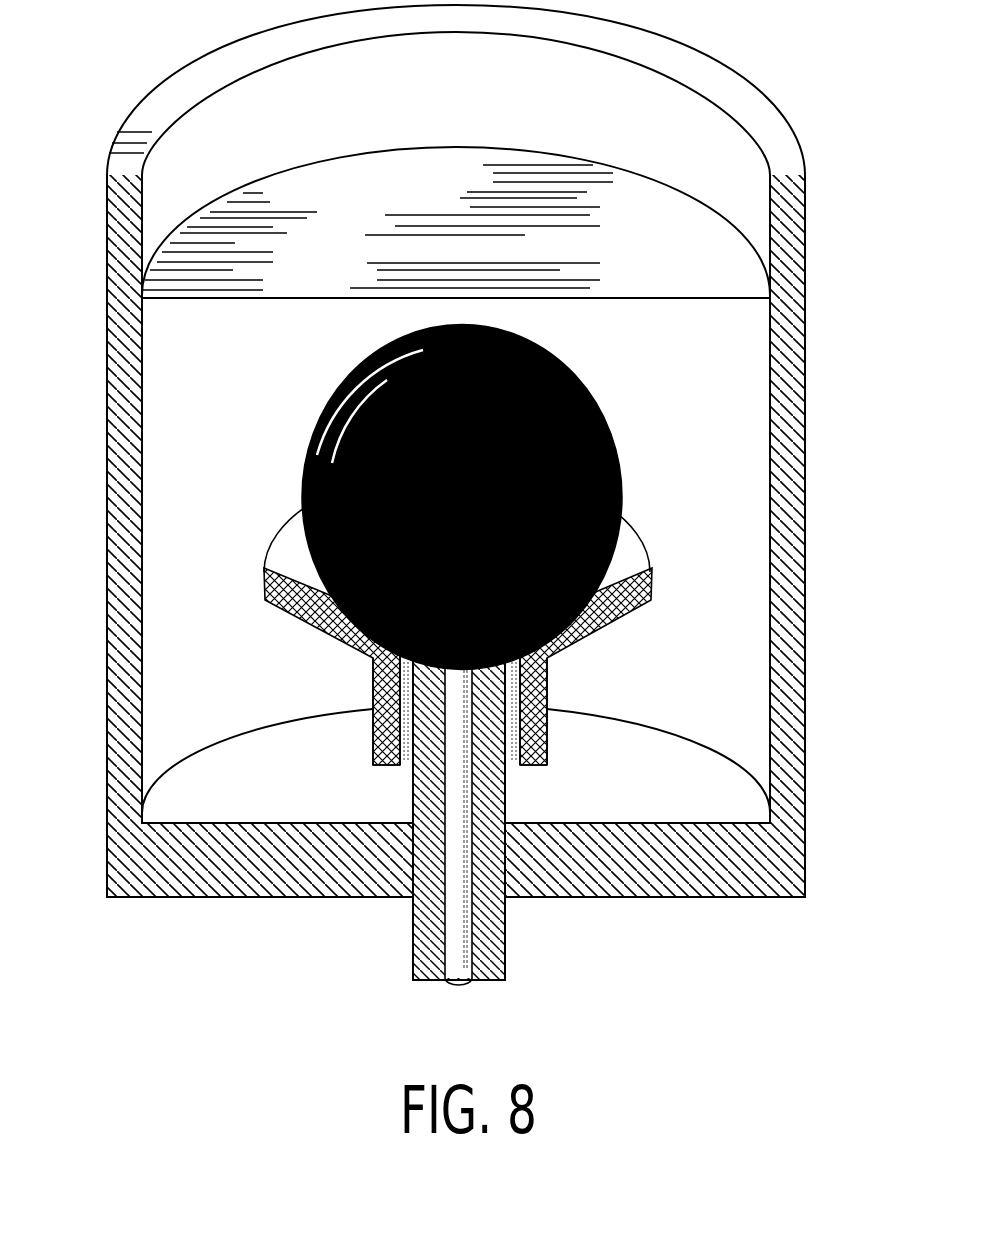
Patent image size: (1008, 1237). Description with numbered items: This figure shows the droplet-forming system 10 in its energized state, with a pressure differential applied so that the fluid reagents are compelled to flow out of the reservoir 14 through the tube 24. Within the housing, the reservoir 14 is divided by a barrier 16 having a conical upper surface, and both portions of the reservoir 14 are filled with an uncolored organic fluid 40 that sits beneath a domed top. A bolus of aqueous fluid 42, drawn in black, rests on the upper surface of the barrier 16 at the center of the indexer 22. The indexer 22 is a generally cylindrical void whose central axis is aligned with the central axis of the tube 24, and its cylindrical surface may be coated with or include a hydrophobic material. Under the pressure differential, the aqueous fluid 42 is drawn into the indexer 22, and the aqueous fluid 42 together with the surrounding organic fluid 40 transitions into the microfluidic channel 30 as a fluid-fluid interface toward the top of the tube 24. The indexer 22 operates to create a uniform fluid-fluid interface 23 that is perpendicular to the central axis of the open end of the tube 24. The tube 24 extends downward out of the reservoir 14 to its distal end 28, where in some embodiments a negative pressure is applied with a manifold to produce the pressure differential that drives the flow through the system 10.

The system 10 is at (103, 120).
The reservoir 14 is at (683, 400).
The barrier 16 is at (615, 627).
The indexer 22 is at (370, 670).
The fluid-fluid interface 23 is at (547, 705).
The tube 24 is at (360, 902).
The distal end 28 is at (505, 957).
The microfluidic channel 30 is at (457, 988).
The organic fluid 40 is at (643, 243).
The aqueous fluid 42 is at (620, 460).